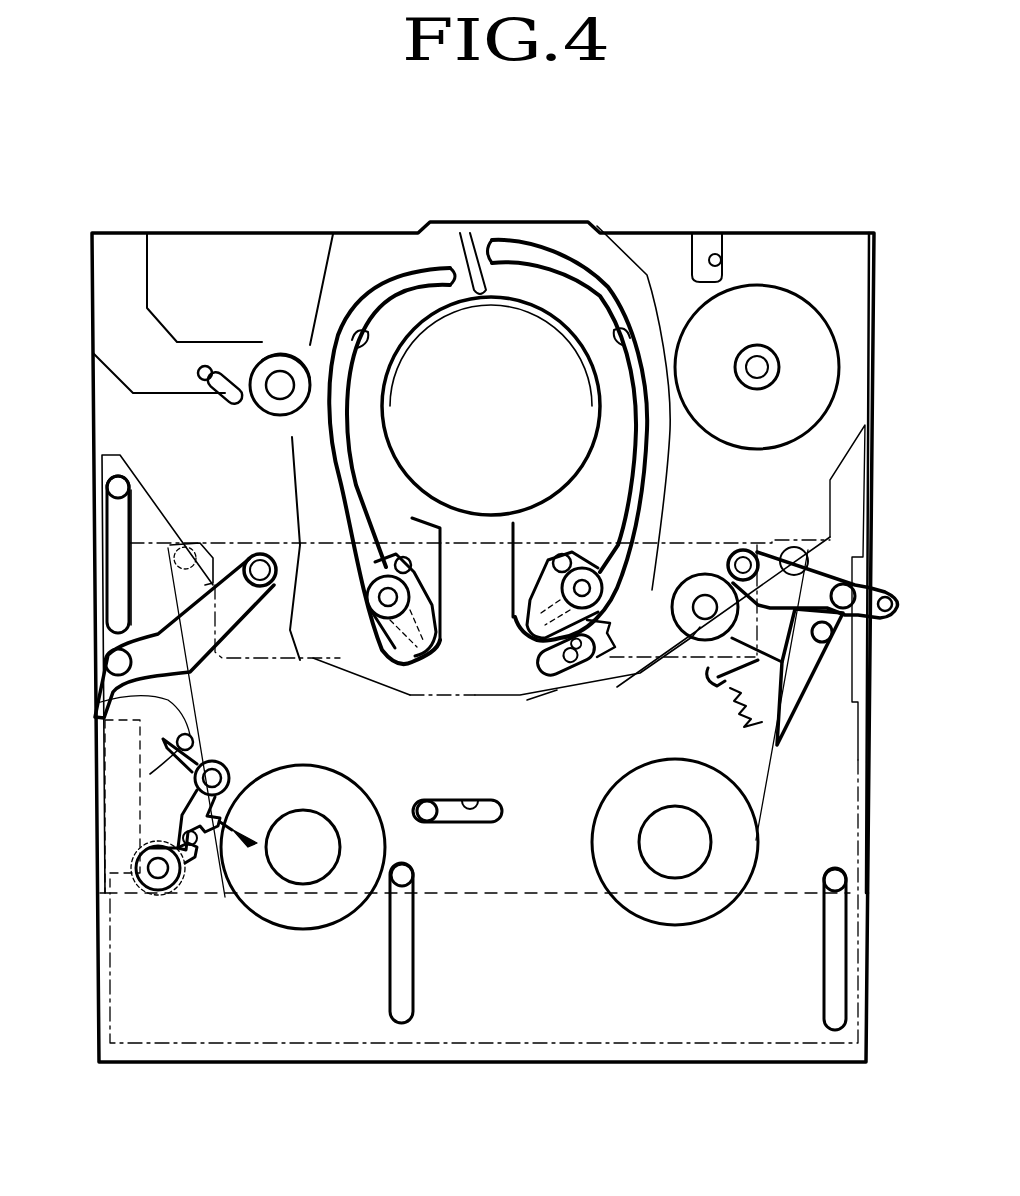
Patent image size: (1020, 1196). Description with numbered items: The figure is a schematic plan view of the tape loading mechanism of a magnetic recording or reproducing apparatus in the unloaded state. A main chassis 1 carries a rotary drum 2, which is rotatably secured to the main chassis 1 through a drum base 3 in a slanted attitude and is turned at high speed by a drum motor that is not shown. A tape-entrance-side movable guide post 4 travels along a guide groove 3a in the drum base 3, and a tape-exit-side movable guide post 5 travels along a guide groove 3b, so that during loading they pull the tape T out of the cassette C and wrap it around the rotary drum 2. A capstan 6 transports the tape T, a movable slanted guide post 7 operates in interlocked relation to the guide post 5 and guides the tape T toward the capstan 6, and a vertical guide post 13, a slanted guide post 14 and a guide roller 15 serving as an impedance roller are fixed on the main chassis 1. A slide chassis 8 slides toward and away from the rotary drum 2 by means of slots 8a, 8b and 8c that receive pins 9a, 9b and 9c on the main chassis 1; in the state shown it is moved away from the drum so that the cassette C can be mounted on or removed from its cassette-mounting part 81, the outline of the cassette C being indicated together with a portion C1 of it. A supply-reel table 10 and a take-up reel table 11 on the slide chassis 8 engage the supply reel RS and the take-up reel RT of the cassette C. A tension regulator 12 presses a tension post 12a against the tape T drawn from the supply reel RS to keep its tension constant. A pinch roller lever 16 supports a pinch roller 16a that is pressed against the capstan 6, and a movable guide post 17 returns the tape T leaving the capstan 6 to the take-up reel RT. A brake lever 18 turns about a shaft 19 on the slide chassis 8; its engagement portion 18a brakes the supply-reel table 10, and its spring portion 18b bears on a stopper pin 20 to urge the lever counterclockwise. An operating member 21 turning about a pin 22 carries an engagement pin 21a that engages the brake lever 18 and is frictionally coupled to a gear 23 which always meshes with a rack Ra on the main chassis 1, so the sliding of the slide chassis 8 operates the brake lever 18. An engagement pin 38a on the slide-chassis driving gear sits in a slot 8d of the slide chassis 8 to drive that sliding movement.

The main chassis 1 is at (242, 232).
The rotary drum 2 is at (503, 325).
The drum base 3 is at (488, 411).
The guide groove 3a is at (362, 338).
The guide groove 3b is at (622, 336).
The tape-entrance-side movable guide post 4 is at (405, 598).
The tape-exit-side movable guide post 5 is at (585, 562).
The capstan 6 is at (760, 367).
The movable slanted guide post 7 is at (578, 670).
The slide chassis 8 is at (655, 1062).
The slot 8a is at (125, 520).
The slot 8b is at (405, 990).
The slot 8c is at (830, 985).
The slot 8d is at (472, 803).
The cassette-mounting part 81 is at (546, 970).
The pin 9a is at (110, 487).
The pin 9b is at (410, 874).
The pin 9c is at (845, 880).
The supply-reel table 10 is at (303, 887).
The take-up reel table 11 is at (675, 882).
The tension regulator 12 is at (208, 598).
The tension post 12a is at (262, 575).
The vertical guide post 13 is at (205, 368).
The slanted guide post 14 is at (232, 384).
The guide roller 15 is at (278, 362).
The pinch roller lever 16 is at (798, 692).
The pinch roller 16a is at (694, 590).
The movable guide post 17 is at (745, 556).
The brake lever 18 is at (172, 770).
The engagement portion 18a is at (226, 832).
The spring portion 18b is at (168, 742).
The shaft 19 is at (200, 747).
The stopper pin 20 is at (97, 708).
The operating member 21 is at (146, 922).
The engagement pin 21a is at (196, 845).
The pin 22 is at (158, 875).
The gear 23 is at (180, 878).
The engagement pin 38a is at (420, 808).
The cassette C is at (745, 1045).
The cassette portion C1 is at (483, 694).
The rack Ra is at (108, 745).
The supply reel RS is at (302, 918).
The take-up reel RT is at (692, 912).
The tape T is at (762, 812).